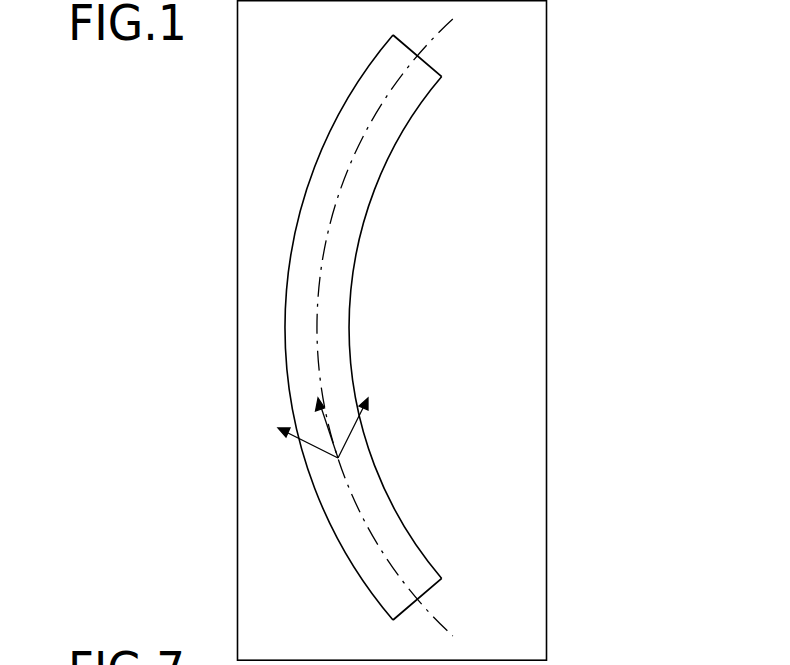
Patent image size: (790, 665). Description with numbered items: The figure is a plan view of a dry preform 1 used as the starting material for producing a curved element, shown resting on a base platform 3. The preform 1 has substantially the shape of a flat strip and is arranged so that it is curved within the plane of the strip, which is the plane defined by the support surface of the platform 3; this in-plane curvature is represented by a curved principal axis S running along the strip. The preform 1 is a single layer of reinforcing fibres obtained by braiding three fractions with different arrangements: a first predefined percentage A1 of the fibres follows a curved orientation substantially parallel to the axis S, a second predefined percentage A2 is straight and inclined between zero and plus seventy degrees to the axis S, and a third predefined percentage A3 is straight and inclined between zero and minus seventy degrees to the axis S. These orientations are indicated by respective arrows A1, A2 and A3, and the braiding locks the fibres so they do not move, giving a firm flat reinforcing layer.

The dry preform 1 is at (255, 292).
The base platform 3 is at (503, 181).
The curved principal axis S is at (320, 283).
The first predefined percentage of fibres A1 is at (330, 425).
The second predefined percentage of fibres A2 is at (312, 450).
The third predefined percentage of fibres A3 is at (345, 441).